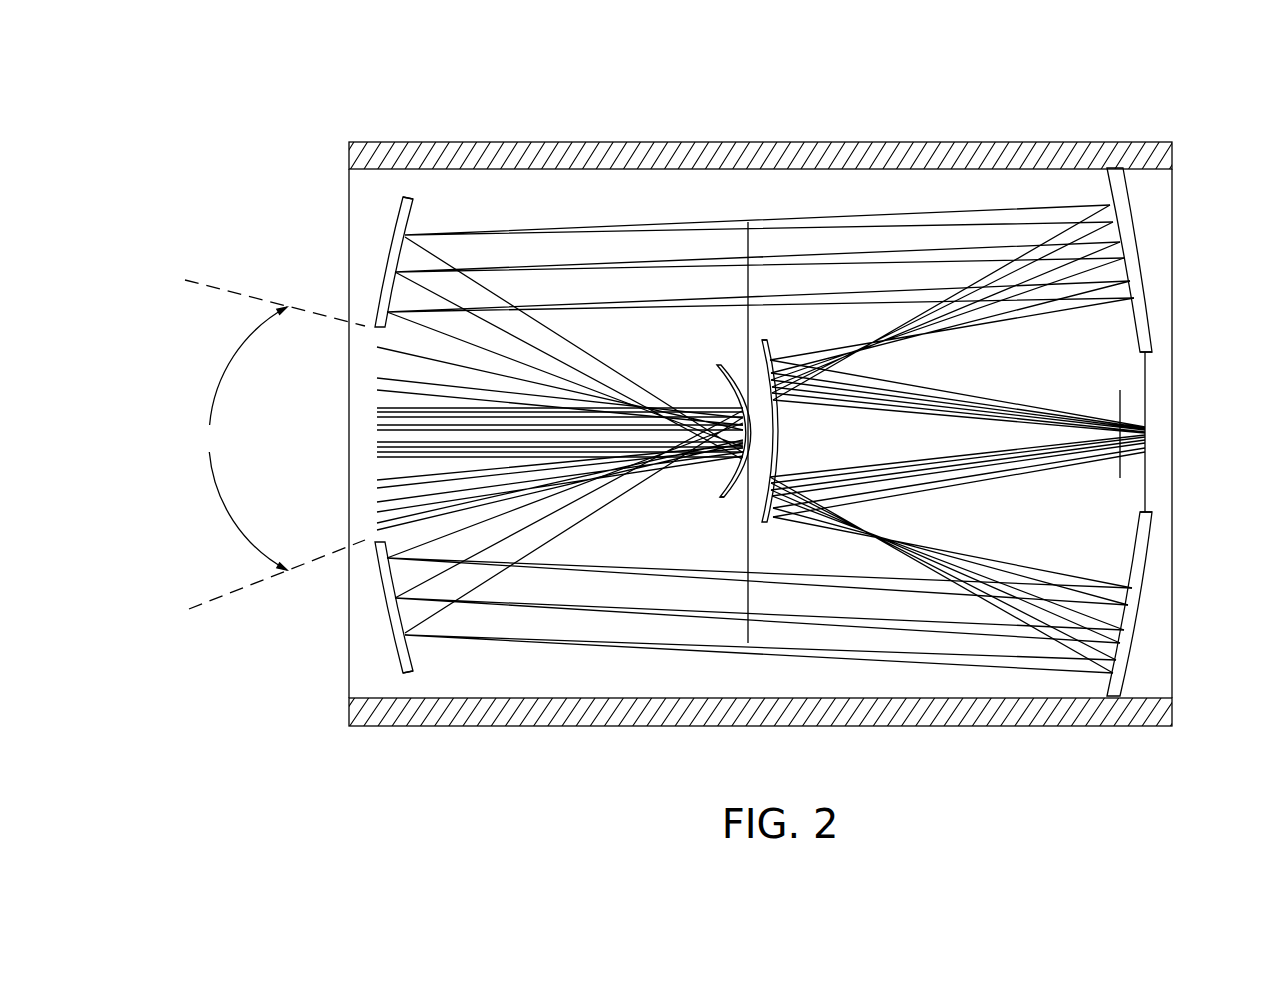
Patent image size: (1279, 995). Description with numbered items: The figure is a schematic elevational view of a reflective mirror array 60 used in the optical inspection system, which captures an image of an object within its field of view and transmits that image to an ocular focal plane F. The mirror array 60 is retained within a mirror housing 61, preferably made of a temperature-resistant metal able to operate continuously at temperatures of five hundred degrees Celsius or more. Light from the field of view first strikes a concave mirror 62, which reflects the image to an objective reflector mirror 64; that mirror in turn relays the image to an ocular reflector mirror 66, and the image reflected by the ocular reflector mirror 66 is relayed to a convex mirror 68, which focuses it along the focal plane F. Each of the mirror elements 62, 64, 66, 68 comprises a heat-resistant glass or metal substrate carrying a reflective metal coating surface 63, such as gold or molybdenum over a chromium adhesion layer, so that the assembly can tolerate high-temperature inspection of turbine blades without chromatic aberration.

The reflective mirror array 60 is at (722, 453).
The mirror housing 61 is at (628, 155).
The concave mirror 62 is at (737, 497).
The coating surface 63 is at (412, 208).
The objective reflector mirror 64 is at (380, 258).
The ocular reflector mirror 66 is at (1142, 214).
The convex mirror 68 is at (764, 542).
The focal plane F is at (1155, 455).